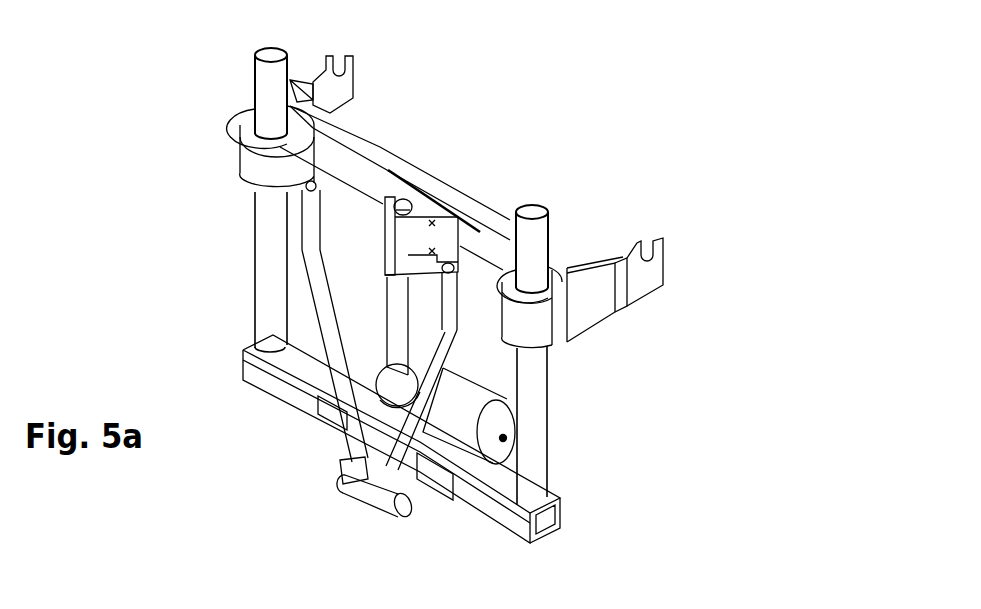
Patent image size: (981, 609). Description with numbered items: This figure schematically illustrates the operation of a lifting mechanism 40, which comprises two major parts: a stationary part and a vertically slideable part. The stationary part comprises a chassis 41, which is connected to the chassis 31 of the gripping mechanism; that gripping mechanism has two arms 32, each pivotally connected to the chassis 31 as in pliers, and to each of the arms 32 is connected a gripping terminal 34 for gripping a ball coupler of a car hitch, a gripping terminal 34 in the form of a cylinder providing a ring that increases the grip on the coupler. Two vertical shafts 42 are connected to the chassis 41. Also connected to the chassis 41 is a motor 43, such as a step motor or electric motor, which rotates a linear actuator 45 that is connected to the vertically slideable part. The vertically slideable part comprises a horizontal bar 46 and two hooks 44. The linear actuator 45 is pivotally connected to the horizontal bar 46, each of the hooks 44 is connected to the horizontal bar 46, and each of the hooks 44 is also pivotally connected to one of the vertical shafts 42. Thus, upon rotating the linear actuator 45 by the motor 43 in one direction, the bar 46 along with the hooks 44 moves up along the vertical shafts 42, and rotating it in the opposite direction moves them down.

The lifting mechanism 40 is at (658, 118).
The chassis 41 is at (477, 498).
The vertical shafts 42 is at (268, 248).
The motor 43 is at (478, 423).
The hooks 44 is at (345, 93).
The linear actuator 45 is at (397, 314).
The horizontal bar 46 is at (378, 150).
The chassis 31 is at (363, 463).
The arms 32 is at (325, 298).
The gripping terminal 34 is at (353, 480).